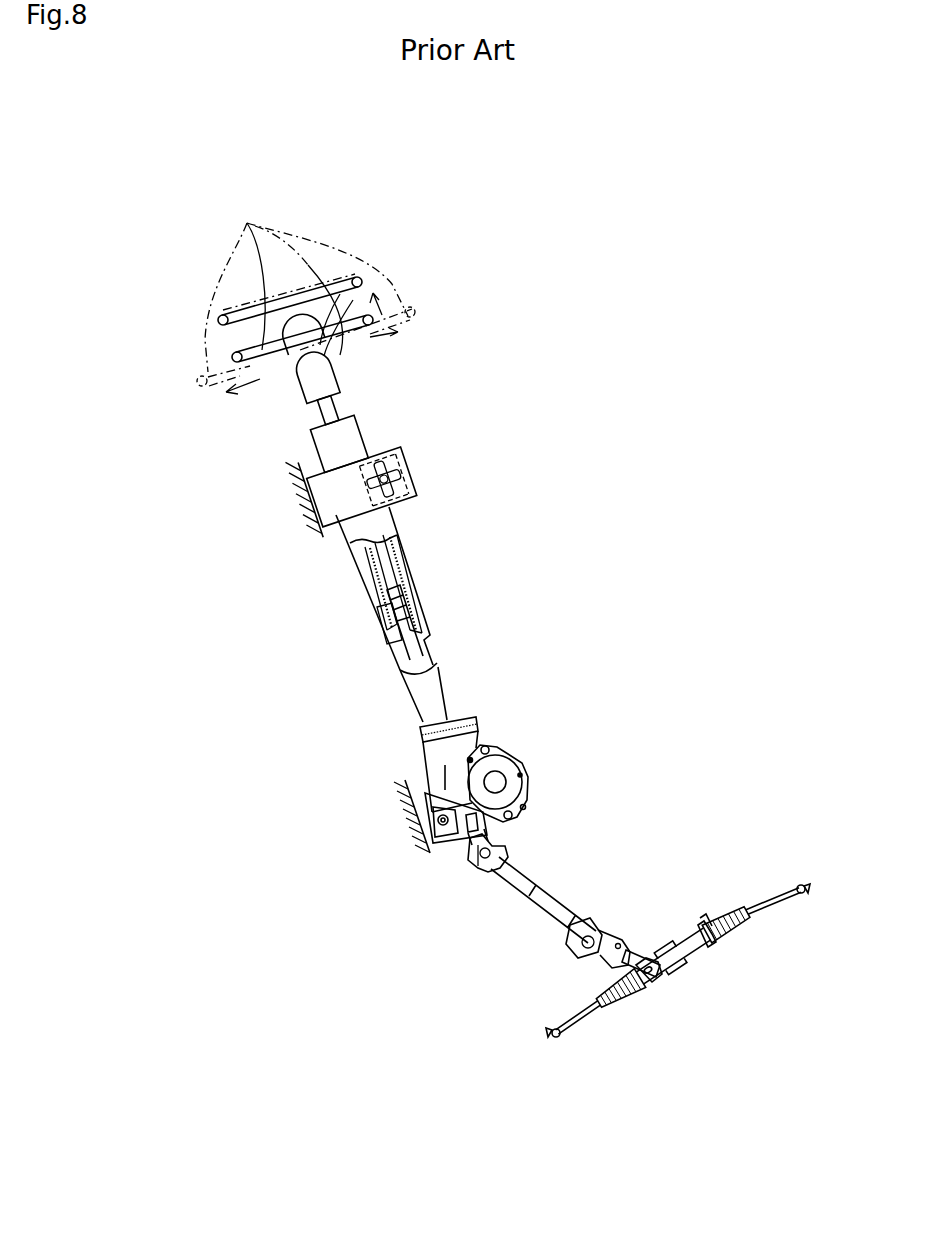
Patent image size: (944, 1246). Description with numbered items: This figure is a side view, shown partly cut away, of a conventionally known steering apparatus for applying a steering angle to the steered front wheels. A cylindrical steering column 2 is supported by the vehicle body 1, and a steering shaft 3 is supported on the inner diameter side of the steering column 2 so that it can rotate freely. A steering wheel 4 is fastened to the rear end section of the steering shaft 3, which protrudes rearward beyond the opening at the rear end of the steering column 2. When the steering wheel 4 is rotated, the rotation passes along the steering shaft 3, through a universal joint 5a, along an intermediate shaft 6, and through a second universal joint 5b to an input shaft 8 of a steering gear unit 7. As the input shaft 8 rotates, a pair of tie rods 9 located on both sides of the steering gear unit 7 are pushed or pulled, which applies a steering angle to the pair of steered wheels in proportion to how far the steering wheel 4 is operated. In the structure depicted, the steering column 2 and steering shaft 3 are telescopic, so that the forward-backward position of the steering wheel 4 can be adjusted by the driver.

The vehicle body 1 is at (300, 500).
The steering column 2 is at (384, 520).
The steering shaft 3 is at (416, 655).
The steering wheel 4 is at (247, 224).
The universal joint 5a is at (485, 870).
The universal joint 5b is at (572, 957).
The intermediate shaft 6 is at (553, 912).
The steering gear unit 7 is at (690, 952).
The input shaft 8 is at (630, 958).
The tie rods 9 is at (792, 903).